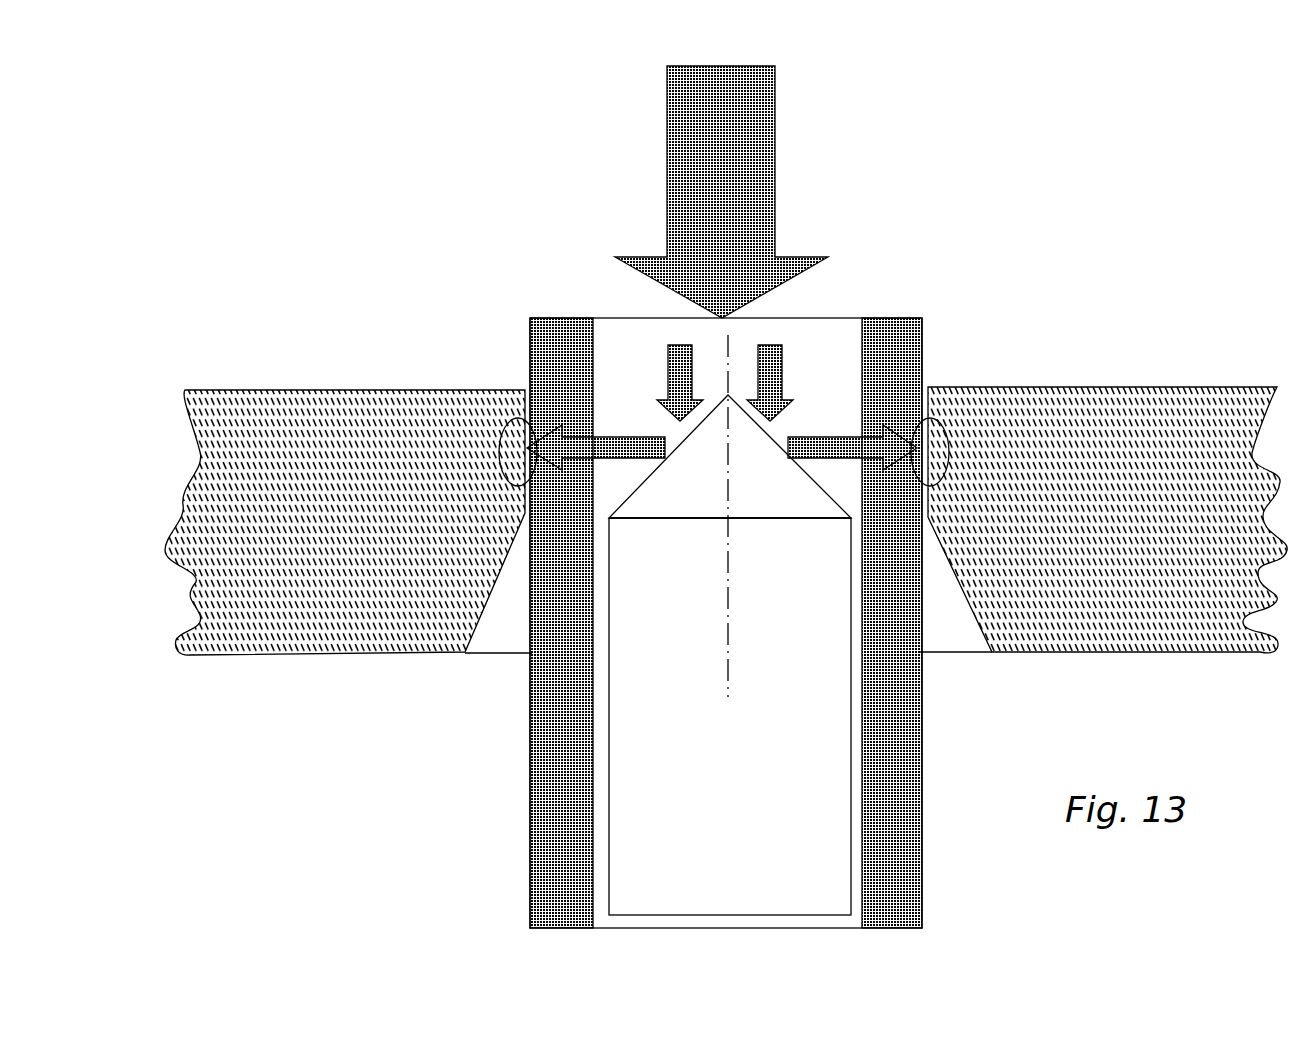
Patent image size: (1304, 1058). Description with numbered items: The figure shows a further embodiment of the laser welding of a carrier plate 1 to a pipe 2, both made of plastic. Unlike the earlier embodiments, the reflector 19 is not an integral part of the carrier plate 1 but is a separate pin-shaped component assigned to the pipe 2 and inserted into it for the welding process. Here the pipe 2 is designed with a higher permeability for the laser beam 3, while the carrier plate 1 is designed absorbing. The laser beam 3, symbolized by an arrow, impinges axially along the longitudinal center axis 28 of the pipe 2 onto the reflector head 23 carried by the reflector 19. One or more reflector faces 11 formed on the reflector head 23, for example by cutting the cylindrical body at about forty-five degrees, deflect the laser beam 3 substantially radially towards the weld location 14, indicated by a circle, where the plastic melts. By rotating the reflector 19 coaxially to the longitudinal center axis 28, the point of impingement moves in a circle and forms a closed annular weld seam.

The carrier plate 1 is at (1163, 383).
The pipe 2 is at (933, 336).
The laser beam 3 is at (772, 172).
The reflector face 11 is at (682, 490).
The weld location 14 is at (947, 423).
The reflector 19 is at (643, 592).
The reflector head 23 is at (752, 493).
The longitudinal center axis 28 is at (728, 672).